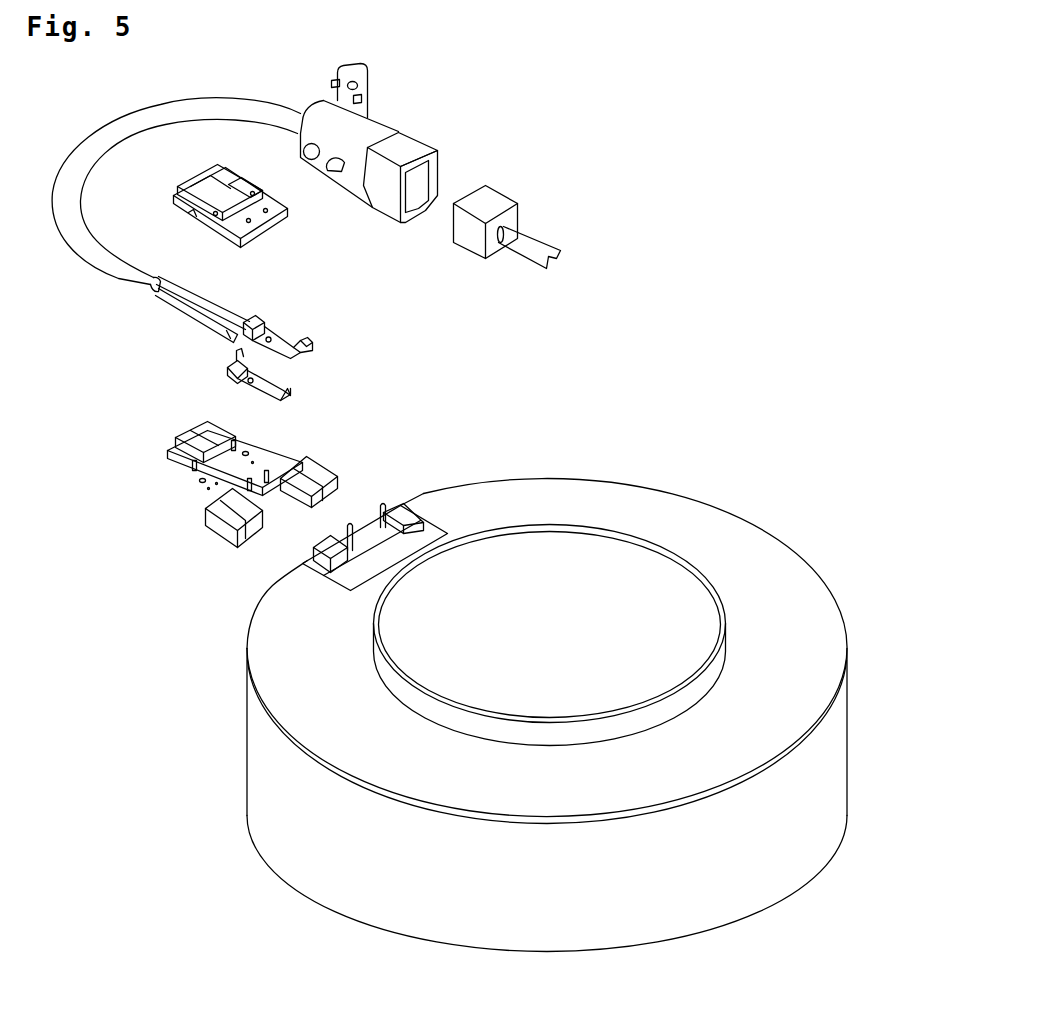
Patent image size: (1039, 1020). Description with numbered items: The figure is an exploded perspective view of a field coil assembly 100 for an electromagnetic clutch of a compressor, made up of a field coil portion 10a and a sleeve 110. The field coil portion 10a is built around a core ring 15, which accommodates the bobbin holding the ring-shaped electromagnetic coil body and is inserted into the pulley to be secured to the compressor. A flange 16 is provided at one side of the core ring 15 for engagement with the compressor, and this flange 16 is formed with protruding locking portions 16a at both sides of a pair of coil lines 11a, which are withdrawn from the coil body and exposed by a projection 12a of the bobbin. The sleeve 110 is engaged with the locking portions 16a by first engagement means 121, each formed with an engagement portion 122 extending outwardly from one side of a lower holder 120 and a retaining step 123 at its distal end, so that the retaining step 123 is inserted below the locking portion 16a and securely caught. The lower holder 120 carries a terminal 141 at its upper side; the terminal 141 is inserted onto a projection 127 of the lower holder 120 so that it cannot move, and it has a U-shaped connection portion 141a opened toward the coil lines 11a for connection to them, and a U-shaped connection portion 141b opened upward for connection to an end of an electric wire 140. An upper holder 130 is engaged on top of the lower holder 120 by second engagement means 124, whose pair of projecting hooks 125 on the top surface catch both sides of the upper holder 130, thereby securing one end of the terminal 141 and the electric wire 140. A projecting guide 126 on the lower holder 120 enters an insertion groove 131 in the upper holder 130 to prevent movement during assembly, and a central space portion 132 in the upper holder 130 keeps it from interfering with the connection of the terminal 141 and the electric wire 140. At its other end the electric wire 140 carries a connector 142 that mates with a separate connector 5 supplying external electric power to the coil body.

The connector 5 is at (488, 203).
The field coil assembly 100 is at (598, 381).
The field coil portion 10a is at (523, 687).
The core ring 15 is at (265, 767).
The flange 16 is at (272, 690).
The locking portions 16a is at (328, 552).
The coil lines 11a is at (349, 550).
The projection 12a is at (358, 560).
The sleeve 110 is at (237, 522).
The lower holder 120 is at (180, 503).
The first engagement means 121 is at (291, 522).
The engagement portion 122 is at (232, 528).
The retaining step 123 is at (240, 545).
The second engagement means 124 is at (110, 548).
The projecting hooks 125 is at (203, 493).
The projecting guide 126 is at (173, 457).
The projection 127 is at (250, 468).
The upper holder 130 is at (253, 199).
The insertion groove 131 is at (228, 180).
The space portion 132 is at (247, 210).
The electric wire 140 is at (260, 103).
The terminal 141 is at (267, 339).
The U-shaped connection portion 141a is at (312, 347).
The U-shaped connection portion 141b is at (258, 317).
The connector 142 is at (370, 136).